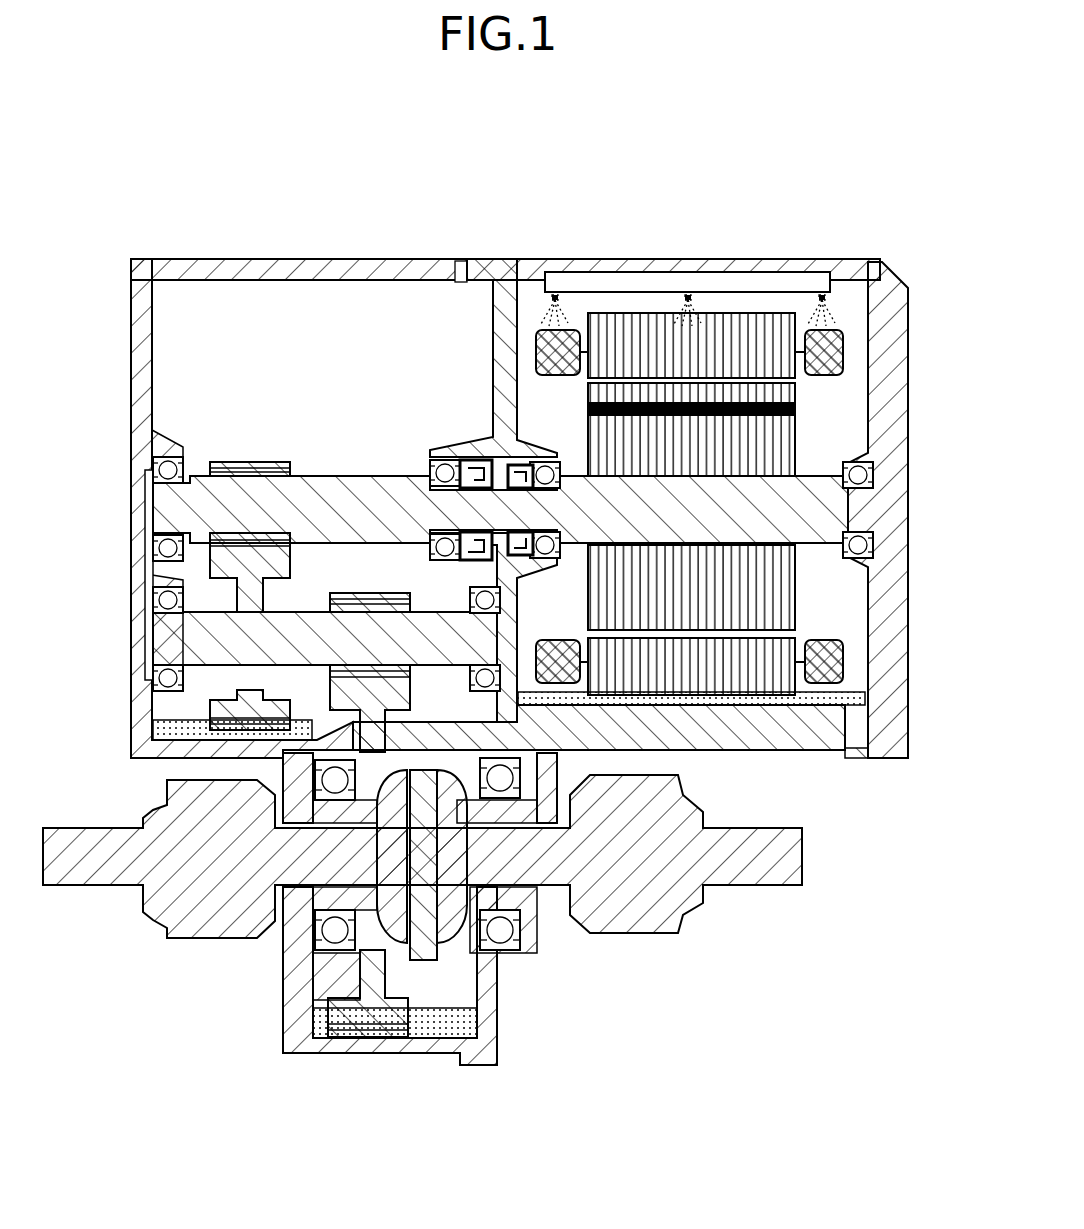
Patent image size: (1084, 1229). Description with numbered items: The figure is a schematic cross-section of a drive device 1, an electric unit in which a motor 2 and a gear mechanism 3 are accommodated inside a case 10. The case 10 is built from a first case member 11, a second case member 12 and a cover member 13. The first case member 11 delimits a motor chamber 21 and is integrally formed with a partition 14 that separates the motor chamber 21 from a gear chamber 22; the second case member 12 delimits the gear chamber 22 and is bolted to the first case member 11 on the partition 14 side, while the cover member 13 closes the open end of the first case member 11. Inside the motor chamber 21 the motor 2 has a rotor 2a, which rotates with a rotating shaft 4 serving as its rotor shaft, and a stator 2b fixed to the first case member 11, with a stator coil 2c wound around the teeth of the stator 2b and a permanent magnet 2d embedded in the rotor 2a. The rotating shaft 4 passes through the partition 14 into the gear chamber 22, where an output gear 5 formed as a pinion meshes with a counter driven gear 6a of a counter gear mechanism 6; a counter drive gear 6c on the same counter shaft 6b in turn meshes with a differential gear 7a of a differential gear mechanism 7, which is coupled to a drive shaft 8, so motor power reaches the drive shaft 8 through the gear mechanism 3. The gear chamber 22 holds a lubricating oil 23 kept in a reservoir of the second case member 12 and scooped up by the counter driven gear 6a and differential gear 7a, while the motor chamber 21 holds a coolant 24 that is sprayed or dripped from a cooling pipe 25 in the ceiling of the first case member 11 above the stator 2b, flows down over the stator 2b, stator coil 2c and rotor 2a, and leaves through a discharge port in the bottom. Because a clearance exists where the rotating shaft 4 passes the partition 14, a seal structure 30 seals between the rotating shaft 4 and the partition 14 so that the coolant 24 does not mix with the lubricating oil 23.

The drive device 1 is at (730, 132).
The motor 2 is at (803, 463).
The rotor 2a is at (790, 440).
The stator 2b is at (738, 335).
The stator coil 2c is at (850, 352).
The permanent magnet 2d is at (800, 410).
The gear mechanism 3 is at (315, 455).
The rotating shaft 4 is at (825, 512).
The output gear 5 is at (255, 467).
The counter gear mechanism 6 is at (215, 599).
The counter driven gear 6a is at (238, 563).
The counter shaft 6b is at (300, 625).
The counter drive gear 6c is at (365, 594).
The differential gear mechanism 7 is at (448, 970).
The differential gear 7a is at (362, 1010).
The drive shaft 8 is at (80, 862).
The case 10 is at (328, 258).
The first case member 11 is at (568, 282).
The second case member 12 is at (150, 262).
The cover member 13 is at (905, 618).
The partition 14 is at (497, 350).
The motor chamber 21 is at (569, 424).
The gear chamber 22 is at (334, 320).
The lubricating oil 23 is at (160, 733).
The coolant 24 is at (833, 305).
The cooling pipe 25 is at (630, 282).
The seal structure 30 is at (466, 421).